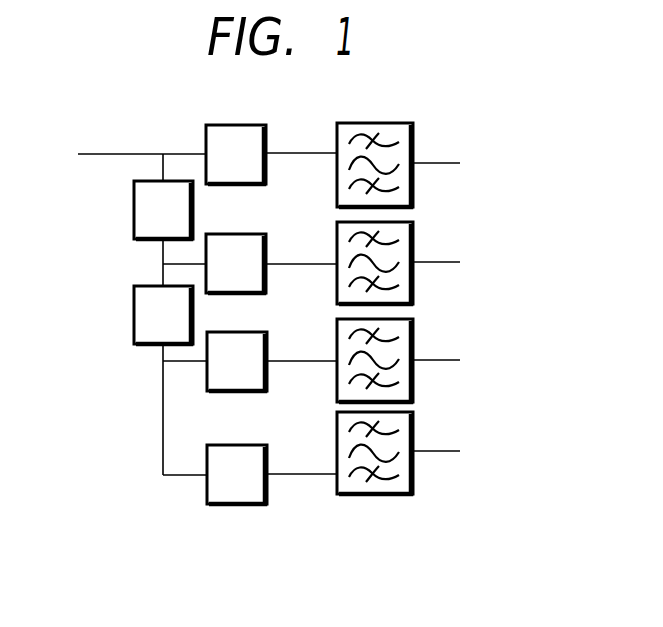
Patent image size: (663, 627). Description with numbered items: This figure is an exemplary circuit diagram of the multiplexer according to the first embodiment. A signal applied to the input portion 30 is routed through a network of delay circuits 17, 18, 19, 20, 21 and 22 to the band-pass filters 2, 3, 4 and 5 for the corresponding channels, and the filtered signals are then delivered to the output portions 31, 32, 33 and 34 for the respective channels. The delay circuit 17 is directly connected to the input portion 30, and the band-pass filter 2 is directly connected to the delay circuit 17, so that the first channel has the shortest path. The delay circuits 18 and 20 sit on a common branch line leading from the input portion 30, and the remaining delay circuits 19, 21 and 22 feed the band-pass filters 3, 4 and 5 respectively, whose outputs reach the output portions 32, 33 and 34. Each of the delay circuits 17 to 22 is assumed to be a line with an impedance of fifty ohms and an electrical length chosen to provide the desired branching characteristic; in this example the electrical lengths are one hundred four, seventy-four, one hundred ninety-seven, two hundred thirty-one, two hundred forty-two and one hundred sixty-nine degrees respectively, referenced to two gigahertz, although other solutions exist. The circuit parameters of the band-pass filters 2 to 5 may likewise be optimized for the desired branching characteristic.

The input portion 30 is at (126, 155).
The delay circuit 18 is at (134, 229).
The delay circuit 20 is at (134, 335).
The delay circuit 17 is at (268, 133).
The delay circuit 19 is at (268, 243).
The delay circuit 21 is at (269, 340).
The delay circuit 22 is at (269, 453).
The band-pass filter 2 is at (415, 127).
The band-pass filter 3 is at (415, 228).
The band-pass filter 4 is at (415, 326).
The band-pass filter 5 is at (415, 419).
The output portion 31 is at (452, 167).
The output portion 32 is at (452, 267).
The output portion 33 is at (453, 360).
The output portion 34 is at (453, 452).